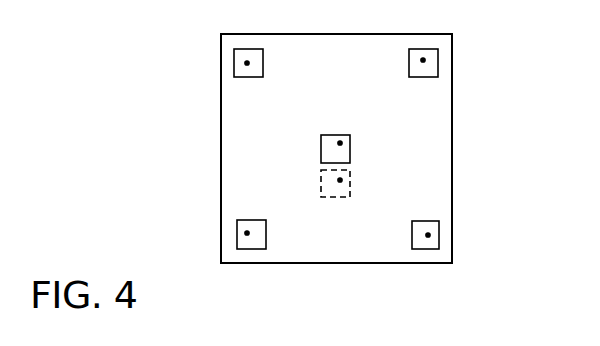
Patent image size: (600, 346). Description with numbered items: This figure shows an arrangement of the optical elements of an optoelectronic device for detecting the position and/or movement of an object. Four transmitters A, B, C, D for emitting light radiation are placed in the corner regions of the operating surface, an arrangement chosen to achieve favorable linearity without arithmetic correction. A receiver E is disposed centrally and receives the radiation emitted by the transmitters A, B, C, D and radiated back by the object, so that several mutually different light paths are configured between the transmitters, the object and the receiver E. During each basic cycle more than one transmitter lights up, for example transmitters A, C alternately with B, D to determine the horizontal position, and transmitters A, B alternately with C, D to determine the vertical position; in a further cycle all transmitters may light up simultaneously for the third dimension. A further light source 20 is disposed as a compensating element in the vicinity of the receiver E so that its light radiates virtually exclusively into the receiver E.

The transmitter A is at (247, 63).
The transmitter B is at (423, 60).
The transmitter C is at (247, 233).
The transmitter D is at (428, 235).
The receiver E is at (340, 143).
The further light source 20 is at (340, 180).